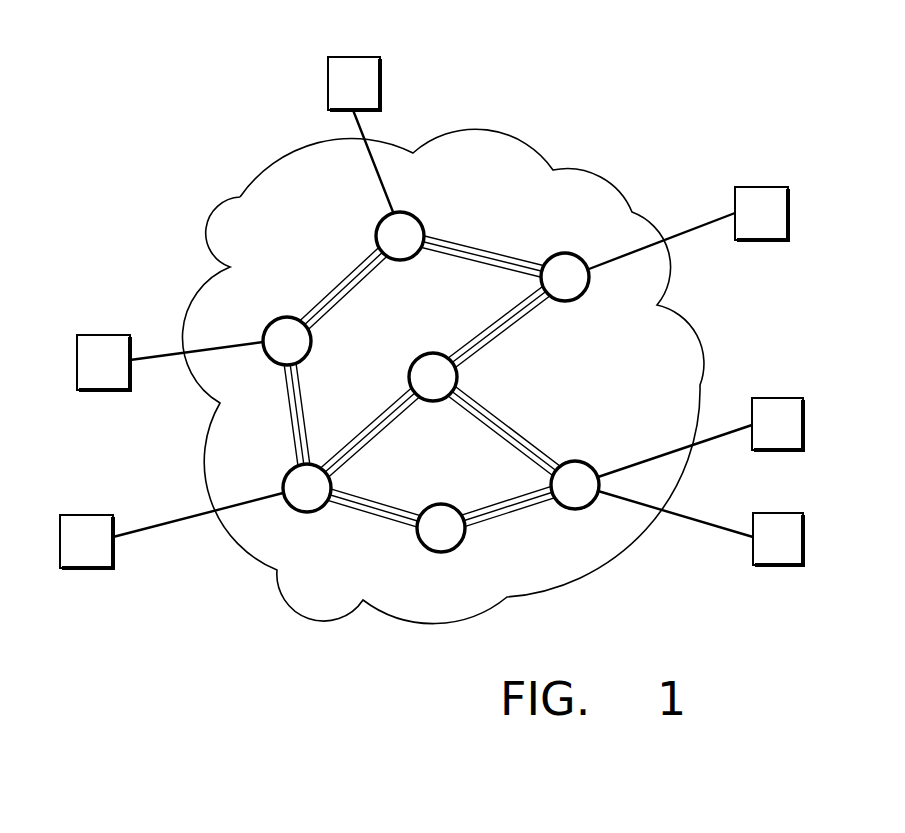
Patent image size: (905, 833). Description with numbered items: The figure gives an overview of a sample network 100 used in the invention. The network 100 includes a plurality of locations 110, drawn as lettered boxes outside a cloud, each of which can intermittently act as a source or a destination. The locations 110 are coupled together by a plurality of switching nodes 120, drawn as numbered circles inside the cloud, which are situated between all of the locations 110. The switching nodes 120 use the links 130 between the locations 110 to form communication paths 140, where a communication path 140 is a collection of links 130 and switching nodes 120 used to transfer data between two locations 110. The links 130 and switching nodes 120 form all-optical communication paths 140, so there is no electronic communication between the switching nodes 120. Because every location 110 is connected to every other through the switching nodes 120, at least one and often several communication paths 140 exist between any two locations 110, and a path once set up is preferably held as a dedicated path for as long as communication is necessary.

The network 100 is at (152, 196).
The location 110 is at (355, 62).
The switching node 120 is at (283, 316).
The link 130 is at (372, 178).
The communication path 140 is at (356, 264).